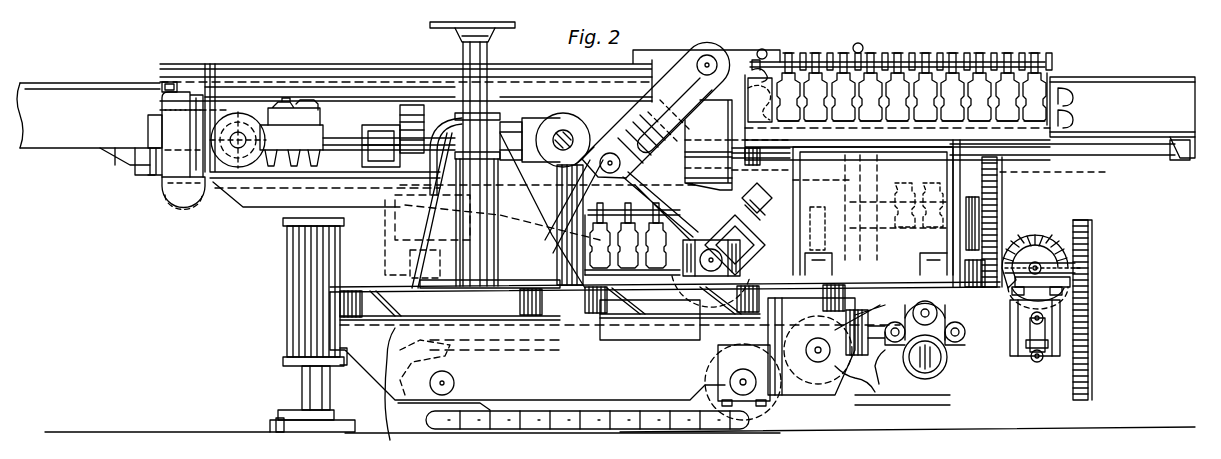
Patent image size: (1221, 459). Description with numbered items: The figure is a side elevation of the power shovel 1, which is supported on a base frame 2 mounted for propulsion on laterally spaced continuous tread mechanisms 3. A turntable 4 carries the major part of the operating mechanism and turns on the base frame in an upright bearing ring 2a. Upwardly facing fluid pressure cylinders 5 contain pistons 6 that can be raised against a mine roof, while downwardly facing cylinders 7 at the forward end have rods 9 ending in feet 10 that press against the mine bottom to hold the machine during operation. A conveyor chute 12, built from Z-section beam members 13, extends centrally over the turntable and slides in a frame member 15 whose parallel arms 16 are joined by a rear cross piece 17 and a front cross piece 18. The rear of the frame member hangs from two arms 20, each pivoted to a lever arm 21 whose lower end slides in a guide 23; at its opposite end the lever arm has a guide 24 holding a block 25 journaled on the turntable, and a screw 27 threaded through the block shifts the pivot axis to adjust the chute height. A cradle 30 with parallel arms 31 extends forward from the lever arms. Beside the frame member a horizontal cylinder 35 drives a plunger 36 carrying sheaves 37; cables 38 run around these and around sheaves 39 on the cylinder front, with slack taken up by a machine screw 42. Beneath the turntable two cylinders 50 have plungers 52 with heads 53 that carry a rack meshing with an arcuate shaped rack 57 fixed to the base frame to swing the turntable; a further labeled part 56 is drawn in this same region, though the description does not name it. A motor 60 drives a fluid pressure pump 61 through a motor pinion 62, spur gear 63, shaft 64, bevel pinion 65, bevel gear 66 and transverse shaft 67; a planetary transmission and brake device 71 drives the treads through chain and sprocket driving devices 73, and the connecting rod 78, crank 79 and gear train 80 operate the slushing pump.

The power shovel 1 is at (232, 212).
The base frame 2 is at (350, 344).
The upright bearing ring 2a is at (612, 312).
The continuous tread mechanisms 3 is at (758, 418).
The turntable 4 is at (815, 344).
The fluid pressure cylinders 5 is at (547, 212).
The pistons 6 is at (463, 49).
The fluid pressure cylinders 7 is at (300, 272).
The rod 9 is at (286, 398).
The foot 10 is at (270, 422).
The conveyor chute 12 is at (1140, 78).
The beam members 13 is at (48, 135).
The frame member 15 is at (162, 66).
The parallel arms 16 is at (312, 62).
The cross piece 17 is at (898, 101).
The cross piece 18 is at (170, 204).
The arms 20 is at (674, 62).
The lever arm 21 is at (590, 148).
The guide 23 is at (418, 262).
The guide 24 is at (726, 273).
The block 25 is at (724, 204).
The screw 27 is at (871, 207).
The cradle 30 is at (156, 114).
The parallel arms 31 is at (148, 130).
The cylinder 35 is at (346, 160).
The plunger 36 is at (514, 124).
The sheaves 37 is at (562, 126).
The cables 38 is at (394, 106).
The sheaves 39 is at (226, 84).
The machine screw 42 is at (772, 103).
The cylinders 50 is at (948, 336).
The plunger 52 is at (914, 302).
The head 53 is at (892, 322).
The link 56 is at (880, 367).
The arcuate shaped rack 57 is at (850, 380).
The motor 60 is at (784, 284).
The fluid pressure pump 61 is at (886, 230).
The motor pinion 62 is at (998, 210).
The spur gear 63 is at (1000, 236).
The shaft 64 is at (1070, 244).
The bevel pinion 65 is at (1072, 220).
The bevel gear 66 is at (1063, 238).
The transverse shaft 67 is at (1085, 264).
The planetary transmission and brake device 71 is at (907, 413).
The chain and sprocket driving devices 73 is at (772, 392).
The connecting rod 78 is at (1042, 362).
The crank 79 is at (1032, 358).
The gear train 80 is at (1096, 318).